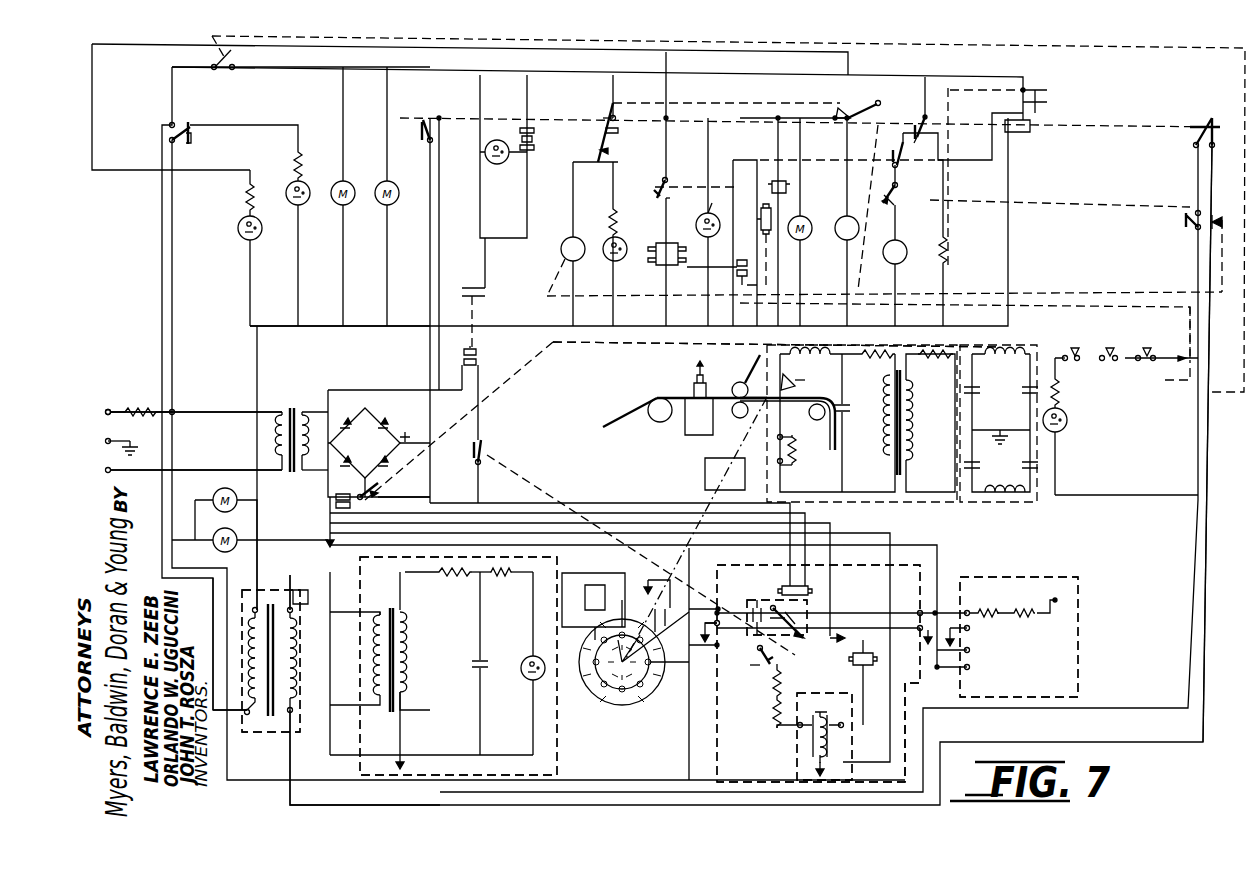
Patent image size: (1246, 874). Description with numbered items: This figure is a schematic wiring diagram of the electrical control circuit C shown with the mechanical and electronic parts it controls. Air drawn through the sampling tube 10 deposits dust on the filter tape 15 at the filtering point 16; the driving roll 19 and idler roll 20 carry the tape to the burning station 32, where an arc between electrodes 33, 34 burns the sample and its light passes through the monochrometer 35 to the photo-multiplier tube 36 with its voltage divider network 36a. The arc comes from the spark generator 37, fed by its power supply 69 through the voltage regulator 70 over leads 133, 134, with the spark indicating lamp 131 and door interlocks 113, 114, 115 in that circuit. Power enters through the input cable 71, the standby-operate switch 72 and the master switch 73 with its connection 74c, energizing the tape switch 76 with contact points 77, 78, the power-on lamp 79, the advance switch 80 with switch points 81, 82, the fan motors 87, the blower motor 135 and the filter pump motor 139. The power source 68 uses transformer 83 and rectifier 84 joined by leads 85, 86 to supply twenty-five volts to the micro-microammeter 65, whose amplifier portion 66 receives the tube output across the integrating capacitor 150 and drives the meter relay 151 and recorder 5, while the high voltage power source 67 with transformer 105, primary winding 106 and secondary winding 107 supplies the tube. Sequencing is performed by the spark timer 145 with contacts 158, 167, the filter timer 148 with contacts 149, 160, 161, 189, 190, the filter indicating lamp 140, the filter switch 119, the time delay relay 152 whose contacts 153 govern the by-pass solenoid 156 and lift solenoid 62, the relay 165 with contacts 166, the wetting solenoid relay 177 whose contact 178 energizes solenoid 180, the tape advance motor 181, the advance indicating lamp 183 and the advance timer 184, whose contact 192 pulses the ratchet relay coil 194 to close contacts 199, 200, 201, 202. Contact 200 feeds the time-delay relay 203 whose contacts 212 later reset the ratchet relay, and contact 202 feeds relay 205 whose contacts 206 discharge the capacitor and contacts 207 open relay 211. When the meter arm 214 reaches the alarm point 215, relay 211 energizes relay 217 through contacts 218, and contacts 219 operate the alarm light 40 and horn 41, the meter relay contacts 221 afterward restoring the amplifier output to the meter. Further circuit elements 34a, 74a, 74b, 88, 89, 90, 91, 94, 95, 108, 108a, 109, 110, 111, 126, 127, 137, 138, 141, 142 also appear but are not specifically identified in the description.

The strip chart recorder 5 is at (1078, 675).
The sampling tube 10 is at (690, 372).
The filter tape 15 is at (620, 428).
The filtering point 16 is at (684, 392).
The driving roll 19 is at (738, 418).
The idler roll 20 is at (658, 422).
The burning station 32 is at (806, 390).
The electrode 33 is at (786, 375).
The electrode 34 is at (787, 434).
The light source 34a is at (814, 372).
The monochrometer 35 is at (705, 474).
The photo-multiplier tube 36 is at (612, 705).
The voltage divider network 36a is at (648, 690).
The spark generator 37 is at (855, 495).
The alarm light 40 is at (500, 140).
The alarm horn 41 is at (540, 138).
The lift solenoid 62 is at (652, 240).
The micro-microammeter 65 is at (895, 770).
The amplifier portion 66 is at (735, 580).
The high voltage power source 67 is at (559, 762).
The power source 68 is at (345, 390).
The spark generator power supply 69 is at (300, 632).
The voltage regulator 70 is at (265, 735).
The power input cable 71 is at (100, 418).
The standby-operate switch 72 is at (226, 68).
The master switch 73 is at (123, 437).
The fuse terminal 74a is at (125, 408).
The fuse 74b is at (160, 410).
The circuit connection 74c is at (175, 410).
The tape switch 76 is at (192, 146).
The contact point 77 is at (189, 122).
The contact point 78 is at (170, 122).
The power-on lamp 79 is at (246, 238).
The advance switch 80 is at (830, 116).
The switch point 81 is at (882, 102).
The switch point 82 is at (850, 112).
The transformer 83 is at (295, 408).
The rectifier 84 is at (420, 420).
The lead 85 is at (362, 402).
The lead 86 is at (320, 482).
The fan motors 87 is at (222, 488).
The supply line 88 is at (175, 485).
The supply line 89 is at (265, 450).
The conductor 90 is at (270, 790).
The fuse 91 is at (285, 590).
The conductor 94 is at (259, 558).
The conductor 95 is at (212, 630).
The transformer 105 is at (395, 715).
The primary winding 106 is at (372, 655).
The secondary winding 107 is at (408, 652).
The resistor 108 is at (452, 578).
The oscillator tube 108a is at (600, 570).
The tube 109 is at (525, 678).
The resistor 110 is at (500, 578).
The capacitor 111 is at (488, 660).
The interlock 113 is at (1080, 346).
The interlock 114 is at (1114, 342).
The interlock 115 is at (1154, 338).
The filter switch 119 is at (1065, 204).
The transformer 126 is at (915, 430).
The capacitor 127 is at (850, 415).
The spark indicating lamp 131 is at (1067, 420).
The spark generator power lead 133 is at (1063, 352).
The spark generator power lead 134 is at (1040, 505).
The air blower motor 135 is at (397, 199).
The supply bus 137 is at (452, 68).
The return bus 138 is at (352, 331).
The filter pump motor 139 is at (352, 202).
The filter indicating lamp 140 is at (603, 257).
The switch arm 141 is at (610, 152).
The control unit 142 is at (593, 340).
The spark timer 145 is at (561, 249).
The filter timer 148 is at (904, 260).
The contacts 149 is at (1186, 222).
The integrating capacitor 150 is at (760, 598).
The meter relay 151 is at (825, 698).
The time delay relay 152 is at (790, 186).
The contacts 153 is at (668, 178).
The by-pass solenoid 156 is at (697, 222).
The contact 158 is at (1192, 378).
The filter timer switch contact 160 is at (605, 105).
The filter timer switch contact 161 is at (598, 112).
The relay 165 is at (737, 272).
The contacts 166 is at (1210, 228).
The contact 167 is at (1168, 348).
The wetting solenoid relay 177 is at (758, 218).
The contact 178 is at (380, 485).
The wetting solenoid 180 is at (345, 509).
The tape advance motor 181 is at (810, 236).
The advance indicating lamp 183 is at (712, 203).
The advance timer 184 is at (855, 236).
The contact 189 is at (895, 205).
The contact 190 is at (898, 188).
The contact 192 is at (900, 168).
The ratchet relay coil 194 is at (1022, 132).
The contact 199 is at (1204, 118).
The contact 200 is at (928, 112).
The contact 201 is at (618, 136).
The contact 202 is at (440, 112).
The time-delay relay 203 is at (947, 252).
The relay 205 is at (810, 590).
The contacts 206 is at (796, 642).
The contacts 207 is at (846, 636).
The relay 211 is at (875, 660).
The contacts 212 is at (1018, 95).
The actuating meter arm 214 is at (777, 730).
The preset alarm point 215 is at (843, 728).
The relay 217 is at (478, 356).
The contacts 218 is at (484, 448).
The contacts 219 is at (487, 293).
The meter relay contacts 221 is at (758, 650).
The electrical control circuit C is at (1216, 565).